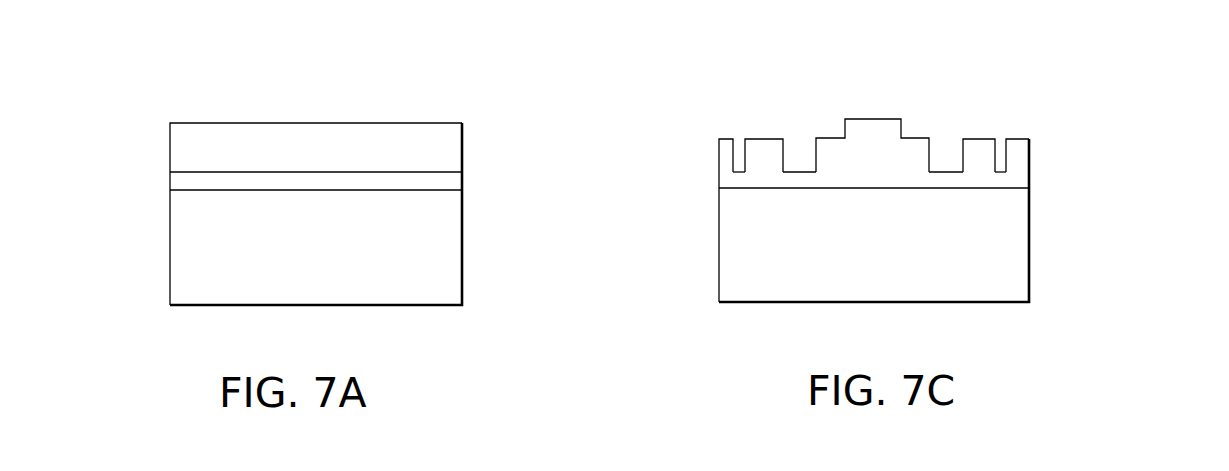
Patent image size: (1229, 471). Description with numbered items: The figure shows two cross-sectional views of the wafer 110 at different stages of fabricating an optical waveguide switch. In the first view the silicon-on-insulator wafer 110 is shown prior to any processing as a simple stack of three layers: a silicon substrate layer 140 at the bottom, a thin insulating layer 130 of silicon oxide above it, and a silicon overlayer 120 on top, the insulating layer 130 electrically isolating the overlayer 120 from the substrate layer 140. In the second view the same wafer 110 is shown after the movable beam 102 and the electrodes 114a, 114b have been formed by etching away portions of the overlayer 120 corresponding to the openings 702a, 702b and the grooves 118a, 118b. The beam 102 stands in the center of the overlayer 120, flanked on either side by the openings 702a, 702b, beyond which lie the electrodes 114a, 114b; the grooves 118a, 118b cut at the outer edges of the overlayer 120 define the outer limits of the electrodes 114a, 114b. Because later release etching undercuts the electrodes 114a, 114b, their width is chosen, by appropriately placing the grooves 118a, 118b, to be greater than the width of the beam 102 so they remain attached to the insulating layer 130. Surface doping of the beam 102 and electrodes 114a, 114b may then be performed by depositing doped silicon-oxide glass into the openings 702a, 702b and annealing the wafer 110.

In FIG. 7A, the wafer 110 is at (106, 93).
In FIG. 7C, the wafer 110 is at (1122, 112).
In FIG. 7A, the overlayer 120 is at (463, 140).
In FIG. 7C, the overlayer 120 is at (1021, 152).
In FIG. 7A, the insulating layer 130 is at (455, 182).
In FIG. 7C, the insulating layer 130 is at (1020, 178).
In FIG. 7A, the substrate layer 140 is at (457, 262).
In FIG. 7C, the substrate layer 140 is at (1023, 248).
In FIG. 7C, the movable beam 102 is at (909, 104).
In FIG. 7C, the electrode 114a is at (757, 139).
In FIG. 7C, the electrode 114b is at (978, 139).
In FIG. 7C, the groove 118a is at (737, 131).
In FIG. 7C, the groove 118b is at (1004, 122).
In FIG. 7C, the opening 702a is at (797, 127).
In FIG. 7C, the opening 702b is at (942, 130).